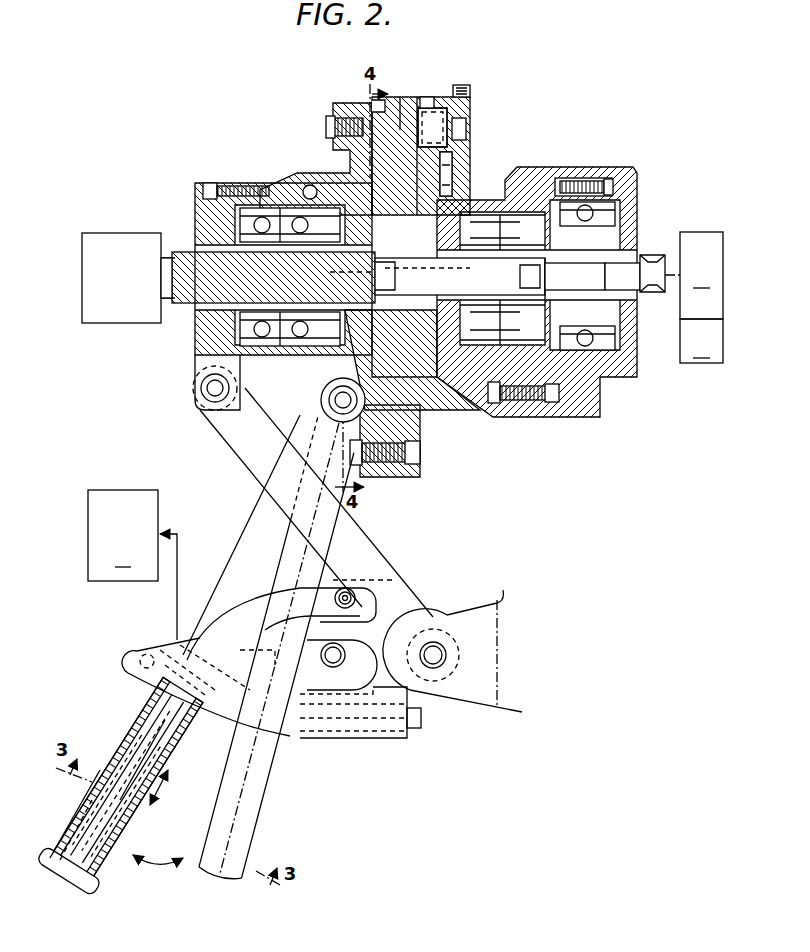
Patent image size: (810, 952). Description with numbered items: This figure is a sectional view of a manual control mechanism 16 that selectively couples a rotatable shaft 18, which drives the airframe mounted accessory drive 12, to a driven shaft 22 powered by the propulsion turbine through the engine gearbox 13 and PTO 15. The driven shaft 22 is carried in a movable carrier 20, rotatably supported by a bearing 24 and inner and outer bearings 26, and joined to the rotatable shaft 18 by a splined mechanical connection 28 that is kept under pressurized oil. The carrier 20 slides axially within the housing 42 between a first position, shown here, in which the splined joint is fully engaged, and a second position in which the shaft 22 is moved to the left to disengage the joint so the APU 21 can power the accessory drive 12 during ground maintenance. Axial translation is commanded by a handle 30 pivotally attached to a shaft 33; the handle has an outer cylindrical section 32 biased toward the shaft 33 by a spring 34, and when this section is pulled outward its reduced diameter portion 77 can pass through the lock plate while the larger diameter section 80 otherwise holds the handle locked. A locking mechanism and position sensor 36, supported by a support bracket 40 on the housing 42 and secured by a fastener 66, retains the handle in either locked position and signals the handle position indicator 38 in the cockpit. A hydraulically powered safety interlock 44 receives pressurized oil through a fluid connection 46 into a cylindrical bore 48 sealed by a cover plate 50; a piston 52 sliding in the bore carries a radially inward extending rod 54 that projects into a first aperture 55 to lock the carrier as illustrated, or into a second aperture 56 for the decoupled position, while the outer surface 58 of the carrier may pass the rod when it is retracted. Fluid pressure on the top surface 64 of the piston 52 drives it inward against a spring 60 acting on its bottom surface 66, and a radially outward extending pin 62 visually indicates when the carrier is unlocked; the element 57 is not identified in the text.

The airframe mounted accessory drive 12 is at (694, 275).
The gearbox 13 is at (121, 278).
The PTO 15 is at (168, 278).
The manual control mechanism 16 is at (540, 128).
The rotatable shaft 18 is at (641, 292).
The movable carrier 20 is at (431, 354).
The APU 21 is at (701, 341).
The driven shaft 22 is at (184, 250).
The bearing 24 is at (262, 218).
The inner and outer bearings 26 is at (590, 211).
The mechanical connection 28 is at (545, 212).
The handle 30 is at (118, 730).
The outer cylindrical section 32 is at (76, 820).
The shaft 33 is at (342, 400).
The spring 34 is at (94, 858).
The locking mechanism and position sensor 36 is at (237, 702).
The handle position indicator 38 is at (132, 565).
The support bracket 40 is at (252, 481).
The housing 42 is at (200, 385).
The hydraulically powered safety interlock 44 is at (441, 92).
The fluid connection 46 is at (319, 186).
The cylindrical bore 48 is at (462, 128).
The cover plate 50 is at (402, 97).
The piston 52 is at (370, 99).
The rod 54 is at (431, 232).
The first aperture 55 is at (425, 248).
The second aperture 56 is at (464, 208).
The spline 57 is at (451, 232).
The outer surface 58 is at (426, 218).
The spring 60 is at (402, 138).
The radially outward extending pin 62 is at (427, 99).
The top radially outward surface 64 is at (450, 108).
The bottom surface 66 is at (457, 160).
The reduced diameter portion 77 is at (206, 687).
The larger diameter section 80 is at (188, 733).